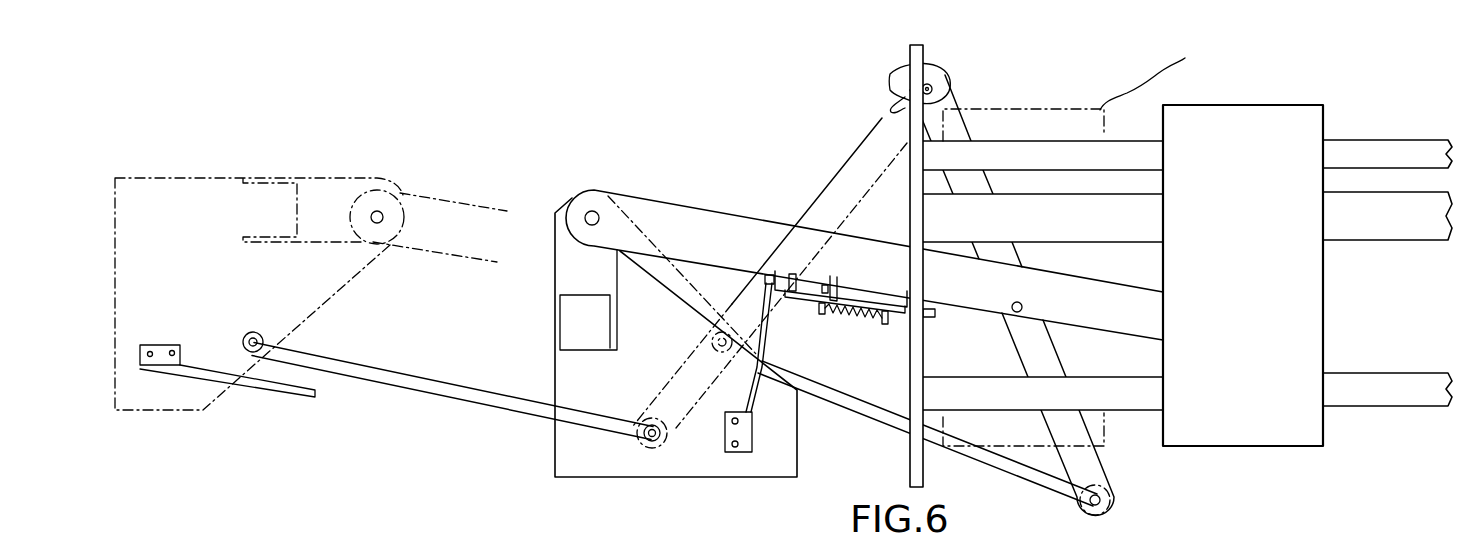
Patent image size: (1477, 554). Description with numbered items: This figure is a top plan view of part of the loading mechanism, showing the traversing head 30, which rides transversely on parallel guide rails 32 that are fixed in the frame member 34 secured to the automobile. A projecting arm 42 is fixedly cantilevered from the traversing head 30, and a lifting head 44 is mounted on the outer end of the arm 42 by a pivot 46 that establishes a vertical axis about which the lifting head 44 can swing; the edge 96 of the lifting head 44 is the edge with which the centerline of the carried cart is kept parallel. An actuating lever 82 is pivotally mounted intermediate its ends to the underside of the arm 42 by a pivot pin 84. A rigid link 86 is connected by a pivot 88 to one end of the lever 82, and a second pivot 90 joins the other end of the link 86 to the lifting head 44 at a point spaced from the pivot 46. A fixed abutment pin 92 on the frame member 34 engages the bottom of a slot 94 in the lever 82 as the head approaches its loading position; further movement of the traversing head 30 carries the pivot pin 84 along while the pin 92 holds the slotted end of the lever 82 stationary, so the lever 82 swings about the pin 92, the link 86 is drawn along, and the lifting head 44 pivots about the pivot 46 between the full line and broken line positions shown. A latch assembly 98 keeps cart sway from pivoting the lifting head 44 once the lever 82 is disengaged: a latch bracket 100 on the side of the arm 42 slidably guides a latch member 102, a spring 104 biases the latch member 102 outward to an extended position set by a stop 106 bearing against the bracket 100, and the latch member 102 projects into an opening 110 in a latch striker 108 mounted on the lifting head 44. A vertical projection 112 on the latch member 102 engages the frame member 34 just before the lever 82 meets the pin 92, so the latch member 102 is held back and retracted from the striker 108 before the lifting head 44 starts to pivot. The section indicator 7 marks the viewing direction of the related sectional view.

The traversing head 30 is at (1203, 110).
The guide rails 32 is at (1413, 147).
The frame member 34 is at (910, 458).
The projecting arm 42 is at (415, 203).
The lifting head 44 is at (177, 410).
The pivot 46 is at (368, 218).
The actuating lever 82 is at (860, 152).
The pivot pin 84 is at (1022, 303).
The rigid link 86 is at (488, 405).
The pivot 88 is at (647, 447).
The second pivot 90 is at (246, 338).
The fixed abutment pin 92 is at (930, 70).
The slot 94 is at (937, 97).
The edge 96 is at (565, 488).
The latch assembly 98 is at (824, 327).
The latch bracket 100 is at (768, 300).
The latch member 102 is at (870, 303).
The spring 104 is at (858, 306).
The stop 106 is at (835, 298).
The latch striker 108 is at (268, 390).
The opening 110 is at (767, 277).
The vertical projection 112 is at (935, 308).
The section line indicator 7 is at (756, 300).